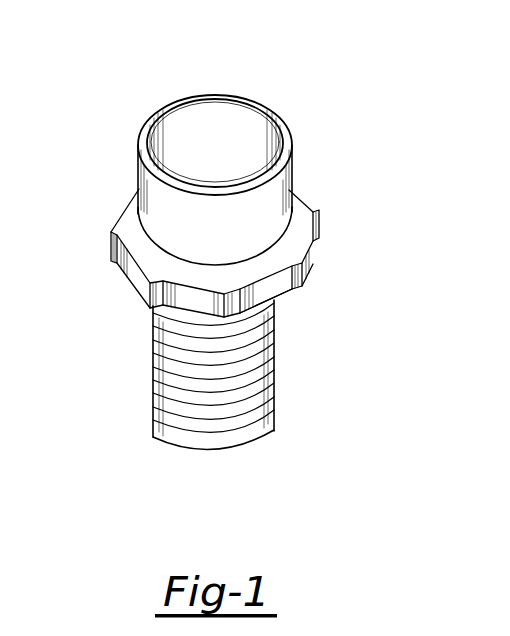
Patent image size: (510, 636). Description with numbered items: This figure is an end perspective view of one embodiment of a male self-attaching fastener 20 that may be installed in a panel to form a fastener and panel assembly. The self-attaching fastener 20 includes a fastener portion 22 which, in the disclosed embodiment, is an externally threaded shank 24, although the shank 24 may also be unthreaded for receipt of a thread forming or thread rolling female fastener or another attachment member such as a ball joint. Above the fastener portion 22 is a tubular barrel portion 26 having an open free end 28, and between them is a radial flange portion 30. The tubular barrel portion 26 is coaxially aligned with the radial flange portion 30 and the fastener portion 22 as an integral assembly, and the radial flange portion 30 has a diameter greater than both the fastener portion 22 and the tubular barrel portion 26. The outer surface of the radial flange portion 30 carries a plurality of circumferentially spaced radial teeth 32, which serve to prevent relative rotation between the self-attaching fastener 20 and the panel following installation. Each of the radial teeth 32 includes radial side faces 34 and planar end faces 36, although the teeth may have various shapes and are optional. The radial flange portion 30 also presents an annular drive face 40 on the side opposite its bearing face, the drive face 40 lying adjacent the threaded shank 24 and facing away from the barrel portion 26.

The self-attaching fastener 20 is at (118, 167).
The fastener portion 22 is at (288, 400).
The externally threaded shank 24 is at (153, 384).
The tubular barrel portion 26 is at (288, 178).
The open free end 28 is at (243, 97).
The radial flange portion 30 is at (299, 220).
The radial teeth 32 is at (142, 303).
The radial side faces 34 is at (285, 288).
The planar end faces 36 is at (306, 272).
The annular drive face 40 is at (137, 232).